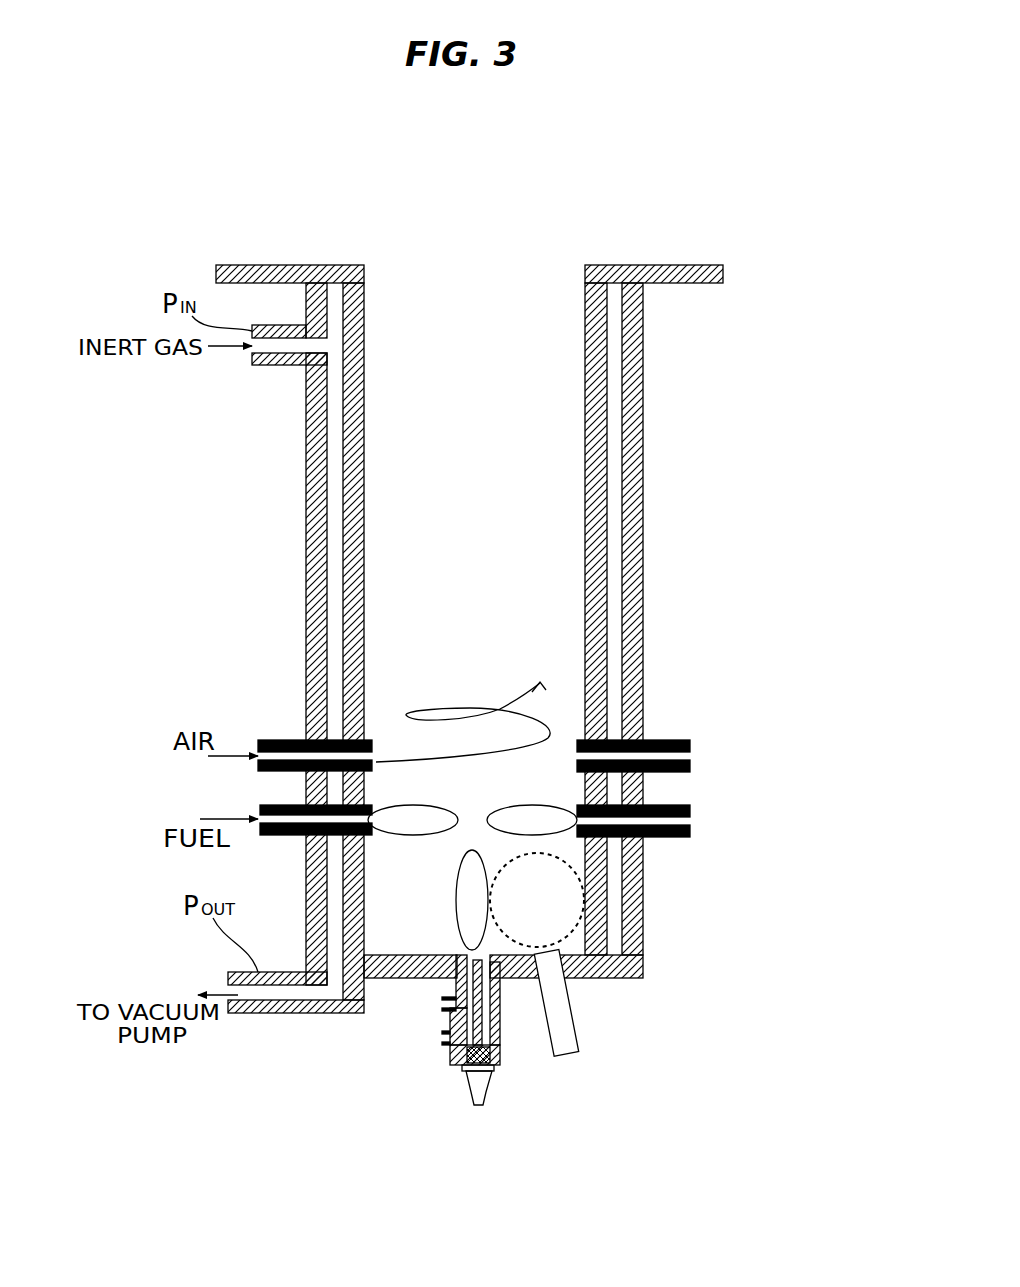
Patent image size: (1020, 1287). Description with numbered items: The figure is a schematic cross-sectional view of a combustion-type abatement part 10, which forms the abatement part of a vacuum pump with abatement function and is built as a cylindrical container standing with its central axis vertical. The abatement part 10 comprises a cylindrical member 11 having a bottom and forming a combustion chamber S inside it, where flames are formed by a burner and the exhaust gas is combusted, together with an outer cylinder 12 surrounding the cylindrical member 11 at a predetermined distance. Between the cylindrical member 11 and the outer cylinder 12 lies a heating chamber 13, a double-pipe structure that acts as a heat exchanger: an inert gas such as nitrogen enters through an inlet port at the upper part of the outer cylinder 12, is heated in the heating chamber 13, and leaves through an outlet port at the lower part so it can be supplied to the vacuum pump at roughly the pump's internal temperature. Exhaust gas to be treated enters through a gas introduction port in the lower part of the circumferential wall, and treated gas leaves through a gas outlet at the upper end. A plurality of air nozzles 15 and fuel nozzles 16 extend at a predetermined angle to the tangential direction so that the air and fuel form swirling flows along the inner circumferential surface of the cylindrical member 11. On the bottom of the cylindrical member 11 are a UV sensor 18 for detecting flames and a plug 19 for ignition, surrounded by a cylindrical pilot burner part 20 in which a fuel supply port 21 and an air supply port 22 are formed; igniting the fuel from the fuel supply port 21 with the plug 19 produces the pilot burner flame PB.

The combustion-type abatement part 10 is at (516, 585).
The cylindrical member 11 is at (606, 614).
The outer cylinder 12 is at (646, 541).
The heating chamber 13 is at (612, 660).
The air nozzles 15 is at (268, 740).
The fuel nozzles 16 is at (262, 806).
The UV sensor 18 is at (578, 1008).
The plug 19 is at (484, 1084).
The pilot burner part 20 is at (474, 1030).
The fuel supply port 21 is at (442, 1004).
The air supply port 22 is at (442, 1039).
The pilot burner flame PB is at (457, 920).
The combustion chamber S is at (488, 683).